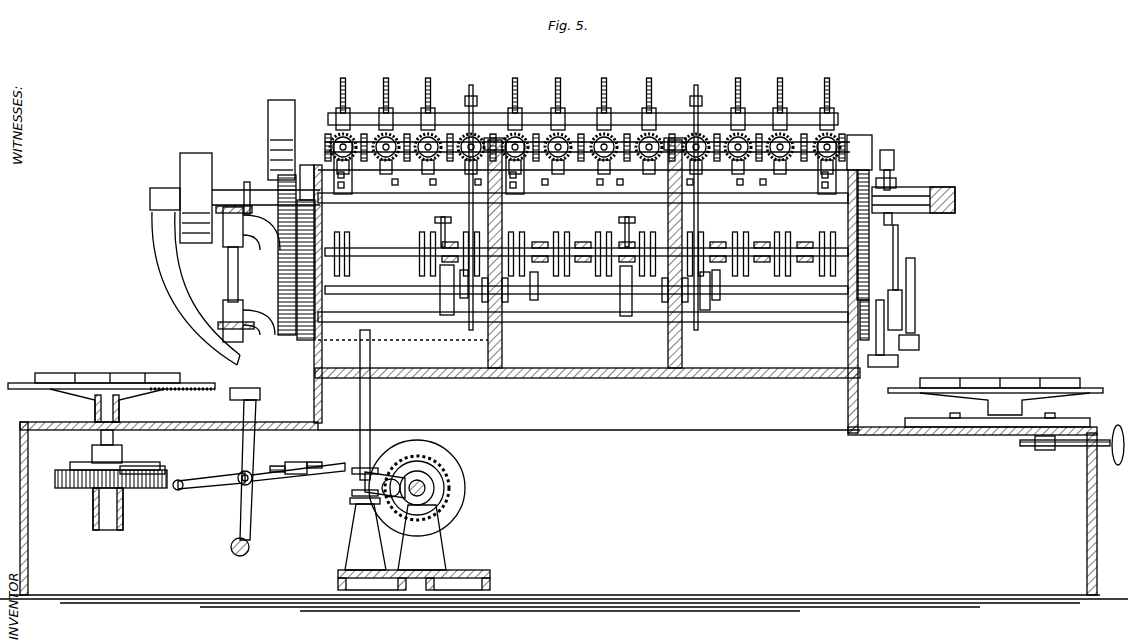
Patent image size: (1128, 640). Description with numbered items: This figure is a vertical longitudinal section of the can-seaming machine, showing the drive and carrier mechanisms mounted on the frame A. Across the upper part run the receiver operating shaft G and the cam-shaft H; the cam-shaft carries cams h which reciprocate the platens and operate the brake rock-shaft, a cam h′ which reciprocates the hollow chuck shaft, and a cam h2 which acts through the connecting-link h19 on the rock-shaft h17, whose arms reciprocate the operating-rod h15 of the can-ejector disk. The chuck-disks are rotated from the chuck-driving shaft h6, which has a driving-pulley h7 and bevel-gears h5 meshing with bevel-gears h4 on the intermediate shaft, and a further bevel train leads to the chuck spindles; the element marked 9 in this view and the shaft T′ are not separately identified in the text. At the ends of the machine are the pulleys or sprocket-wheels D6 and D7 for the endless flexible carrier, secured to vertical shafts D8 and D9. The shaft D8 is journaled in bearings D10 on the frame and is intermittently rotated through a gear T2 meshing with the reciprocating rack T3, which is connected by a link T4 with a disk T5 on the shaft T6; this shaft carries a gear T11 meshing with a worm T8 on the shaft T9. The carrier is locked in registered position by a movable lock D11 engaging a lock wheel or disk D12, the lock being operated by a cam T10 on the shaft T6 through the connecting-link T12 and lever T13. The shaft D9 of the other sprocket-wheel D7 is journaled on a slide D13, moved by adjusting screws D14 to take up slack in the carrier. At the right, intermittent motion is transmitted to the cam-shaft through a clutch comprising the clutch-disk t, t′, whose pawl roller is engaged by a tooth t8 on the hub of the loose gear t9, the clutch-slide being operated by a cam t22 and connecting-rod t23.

The frame A is at (28, 560).
The driving-pulley h7 is at (283, 110).
The rock-shaft h17 is at (352, 115).
The operating-rod h15 is at (430, 88).
The bevel-gear h4 is at (652, 140).
The bevel-gear h5 is at (634, 135).
The chuck-driving shaft h6 is at (563, 140).
The connecting-link h19 is at (478, 186).
The receiver operating shaft G is at (552, 248).
The disc 9 is at (513, 234).
The shaft T′ is at (216, 190).
The cam-shaft H is at (582, 290).
The cam h′ is at (447, 300).
The cam h2 is at (477, 305).
The cam h is at (532, 305).
The movable lock D11 is at (252, 388).
The loose gear t9 is at (864, 180).
The tooth t8 is at (900, 182).
The clutch-disk t′ is at (918, 186).
The clutch-disk t is at (893, 222).
The connecting-rod t23 is at (900, 240).
The cam t22 is at (913, 268).
The sprocket-wheel D6 is at (43, 373).
The lock wheel D12 is at (25, 389).
The vertical shaft D8 is at (120, 437).
The gear T2 is at (90, 490).
The bearings D10 is at (124, 515).
The reciprocating rack T3 is at (172, 474).
The link T4 is at (222, 483).
The connecting-link T12 is at (300, 476).
The lever T13 is at (249, 520).
The shaft T9 is at (371, 400).
The worm T8 is at (352, 497).
The disk T5 is at (465, 476).
The gear T11 is at (448, 466).
The cam T10 is at (420, 462).
The shaft T6 is at (430, 492).
The sprocket-wheel D7 is at (1078, 378).
The vertical shaft D9 is at (1000, 408).
The slide D13 is at (1020, 428).
The adjusting screws D14 is at (1108, 455).